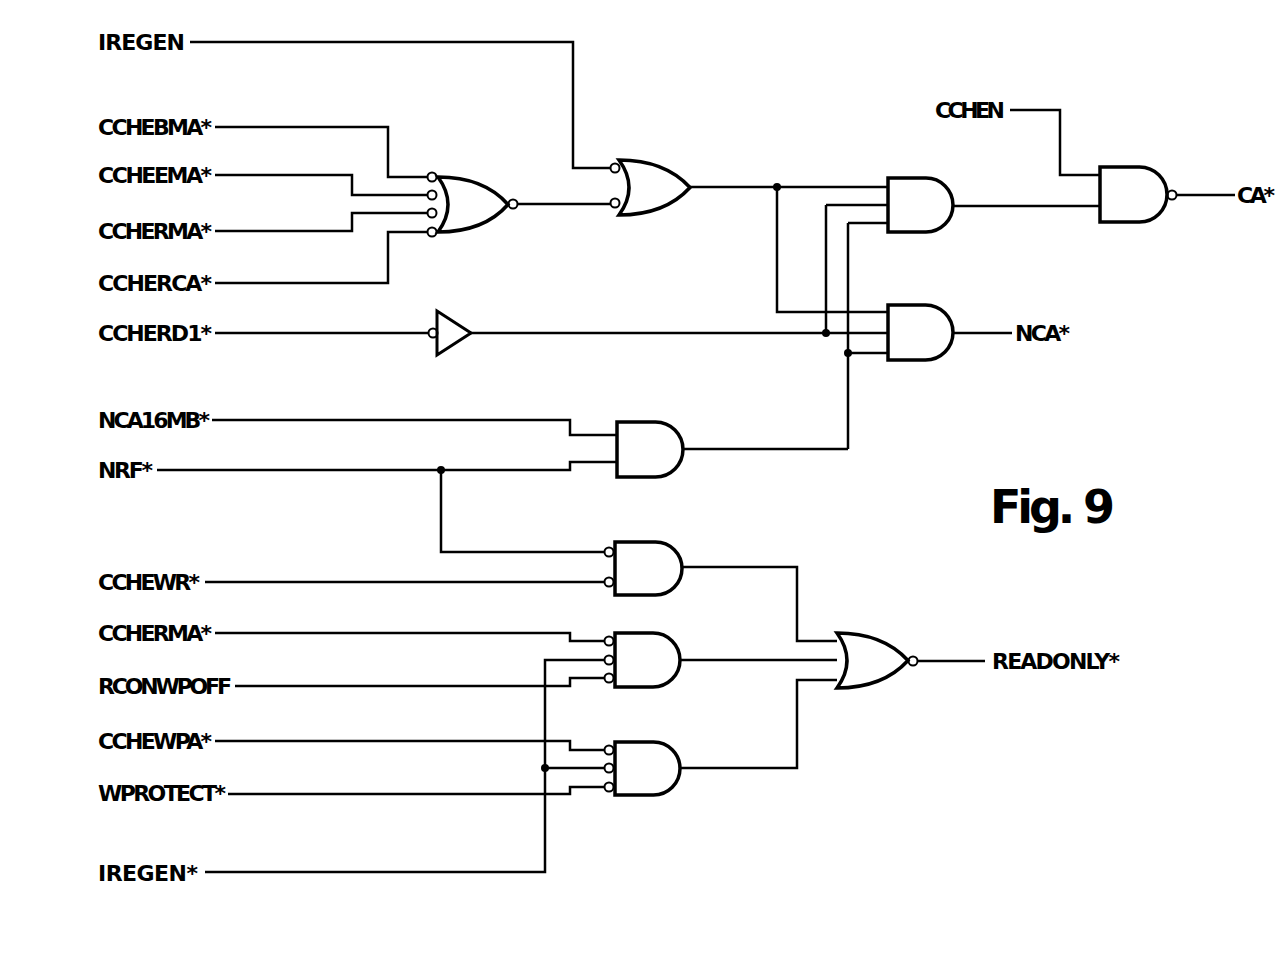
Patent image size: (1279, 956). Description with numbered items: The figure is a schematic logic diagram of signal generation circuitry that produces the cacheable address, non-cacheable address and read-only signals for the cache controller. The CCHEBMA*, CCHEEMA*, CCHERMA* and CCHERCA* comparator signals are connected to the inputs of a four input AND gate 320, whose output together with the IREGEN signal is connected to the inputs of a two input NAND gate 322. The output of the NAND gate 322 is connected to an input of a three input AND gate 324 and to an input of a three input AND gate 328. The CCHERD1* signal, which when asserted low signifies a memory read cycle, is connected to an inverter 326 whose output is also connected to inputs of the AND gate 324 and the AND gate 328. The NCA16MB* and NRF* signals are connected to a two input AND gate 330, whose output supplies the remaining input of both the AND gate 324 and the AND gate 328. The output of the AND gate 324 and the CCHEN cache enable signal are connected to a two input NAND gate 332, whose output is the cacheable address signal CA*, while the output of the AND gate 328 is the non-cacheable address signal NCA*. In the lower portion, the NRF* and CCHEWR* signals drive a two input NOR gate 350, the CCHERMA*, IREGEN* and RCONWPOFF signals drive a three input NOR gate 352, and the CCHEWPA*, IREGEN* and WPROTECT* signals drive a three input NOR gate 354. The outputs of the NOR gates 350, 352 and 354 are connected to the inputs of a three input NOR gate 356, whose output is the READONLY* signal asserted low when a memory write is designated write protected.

The four input AND gate 320 is at (466, 176).
The two input NAND gate 322 is at (647, 165).
The three input AND gate 324 is at (911, 186).
The inverter 326 is at (466, 326).
The three input AND gate 328 is at (935, 316).
The two input AND gate 330 is at (666, 428).
The two input NAND gate 332 is at (1147, 182).
The two input NOR gate 350 is at (672, 563).
The three input NOR gate 352 is at (672, 656).
The three input NOR gate 354 is at (676, 791).
The three input NOR gate 356 is at (866, 640).